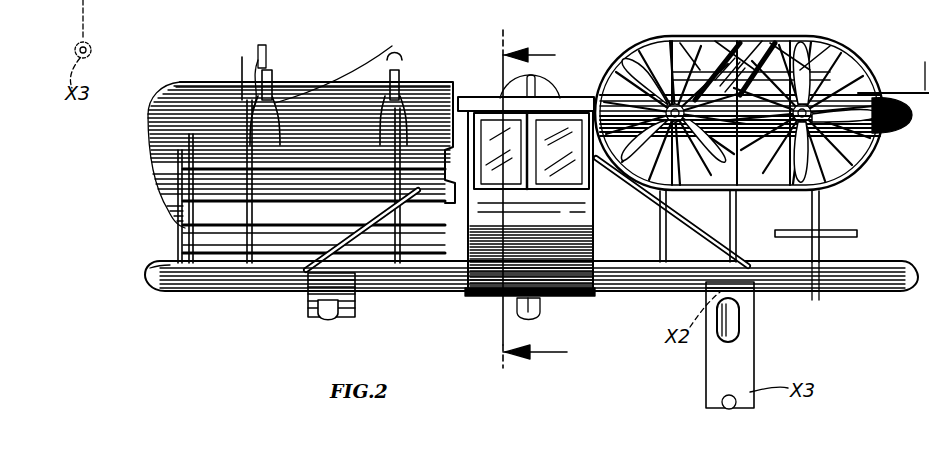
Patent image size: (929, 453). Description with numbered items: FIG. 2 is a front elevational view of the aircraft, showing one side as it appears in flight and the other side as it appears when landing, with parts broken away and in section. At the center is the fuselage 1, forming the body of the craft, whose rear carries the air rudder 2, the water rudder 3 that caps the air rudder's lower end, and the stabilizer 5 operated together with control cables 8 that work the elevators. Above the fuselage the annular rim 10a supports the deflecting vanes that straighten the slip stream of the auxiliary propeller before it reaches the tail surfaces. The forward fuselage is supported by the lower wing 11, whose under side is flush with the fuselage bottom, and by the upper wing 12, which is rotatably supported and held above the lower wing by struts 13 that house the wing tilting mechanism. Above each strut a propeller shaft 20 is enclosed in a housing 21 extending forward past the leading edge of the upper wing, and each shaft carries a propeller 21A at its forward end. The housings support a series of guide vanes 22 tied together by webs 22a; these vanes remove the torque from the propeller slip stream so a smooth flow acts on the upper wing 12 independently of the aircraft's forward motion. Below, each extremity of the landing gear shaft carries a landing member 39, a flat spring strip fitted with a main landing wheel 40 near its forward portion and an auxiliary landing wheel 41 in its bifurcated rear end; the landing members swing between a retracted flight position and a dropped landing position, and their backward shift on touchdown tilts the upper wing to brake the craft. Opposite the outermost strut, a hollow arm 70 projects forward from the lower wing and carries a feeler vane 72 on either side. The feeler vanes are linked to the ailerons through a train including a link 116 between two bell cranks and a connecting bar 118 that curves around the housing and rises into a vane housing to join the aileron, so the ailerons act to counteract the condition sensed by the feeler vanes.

The fuselage 1 is at (582, 230).
The air rudder 2 is at (924, 118).
The water rudder 3 is at (741, 85).
The stabilizer 5 is at (911, 55).
The control cables 8 is at (535, 205).
The annular rim 10a is at (545, 95).
The lower wing 11 is at (176, 287).
The upper wing 12 is at (150, 158).
The struts 13 is at (830, 195).
The propeller shaft 20 is at (276, 76).
The housing 21 is at (338, 63).
The propeller 21A is at (832, 48).
The guide vanes 22 is at (788, 38).
The webs 22a is at (670, 38).
The landing member 39 is at (345, 320).
The main landing wheel 40 is at (322, 318).
The auxiliary landing wheel 41 is at (736, 406).
The arm 70 is at (812, 262).
The feeler vane 72 is at (818, 232).
The link 116 is at (221, 70).
The connecting bar 118 is at (268, 38).